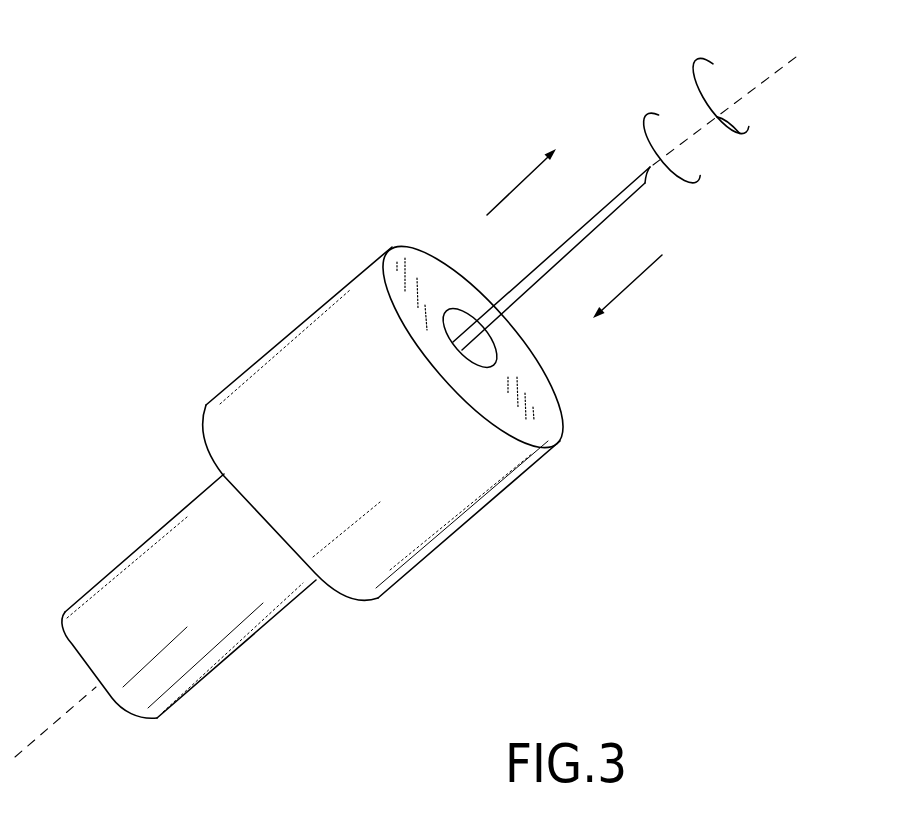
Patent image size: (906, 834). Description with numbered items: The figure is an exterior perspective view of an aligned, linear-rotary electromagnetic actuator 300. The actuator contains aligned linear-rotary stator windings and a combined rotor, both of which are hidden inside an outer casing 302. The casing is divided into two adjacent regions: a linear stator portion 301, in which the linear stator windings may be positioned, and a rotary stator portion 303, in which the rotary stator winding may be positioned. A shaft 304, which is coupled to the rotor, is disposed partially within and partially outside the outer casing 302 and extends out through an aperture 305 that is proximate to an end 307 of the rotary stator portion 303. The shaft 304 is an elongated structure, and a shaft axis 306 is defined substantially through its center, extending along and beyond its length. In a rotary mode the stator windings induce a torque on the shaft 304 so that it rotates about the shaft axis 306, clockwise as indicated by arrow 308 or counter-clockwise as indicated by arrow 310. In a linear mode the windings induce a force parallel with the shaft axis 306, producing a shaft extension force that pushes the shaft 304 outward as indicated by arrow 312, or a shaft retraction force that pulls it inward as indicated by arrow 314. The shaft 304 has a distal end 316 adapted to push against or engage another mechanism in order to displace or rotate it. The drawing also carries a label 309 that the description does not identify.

The aligned, linear-rotary electromagnetic actuator 300 is at (187, 184).
The linear stator portion 301 is at (407, 606).
The outer casing 302 is at (218, 395).
The rotary stator portion 303 is at (568, 441).
The shaft 304 is at (574, 249).
The aperture 305 is at (490, 357).
The shaft axis 306 is at (756, 68).
The end 307 is at (543, 415).
The arrow 308 is at (750, 116).
The longitudinal axis 309 is at (119, 701).
The arrow 310 is at (663, 112).
The arrow 312 is at (528, 177).
The arrow 314 is at (631, 288).
The distal end 316 is at (650, 180).